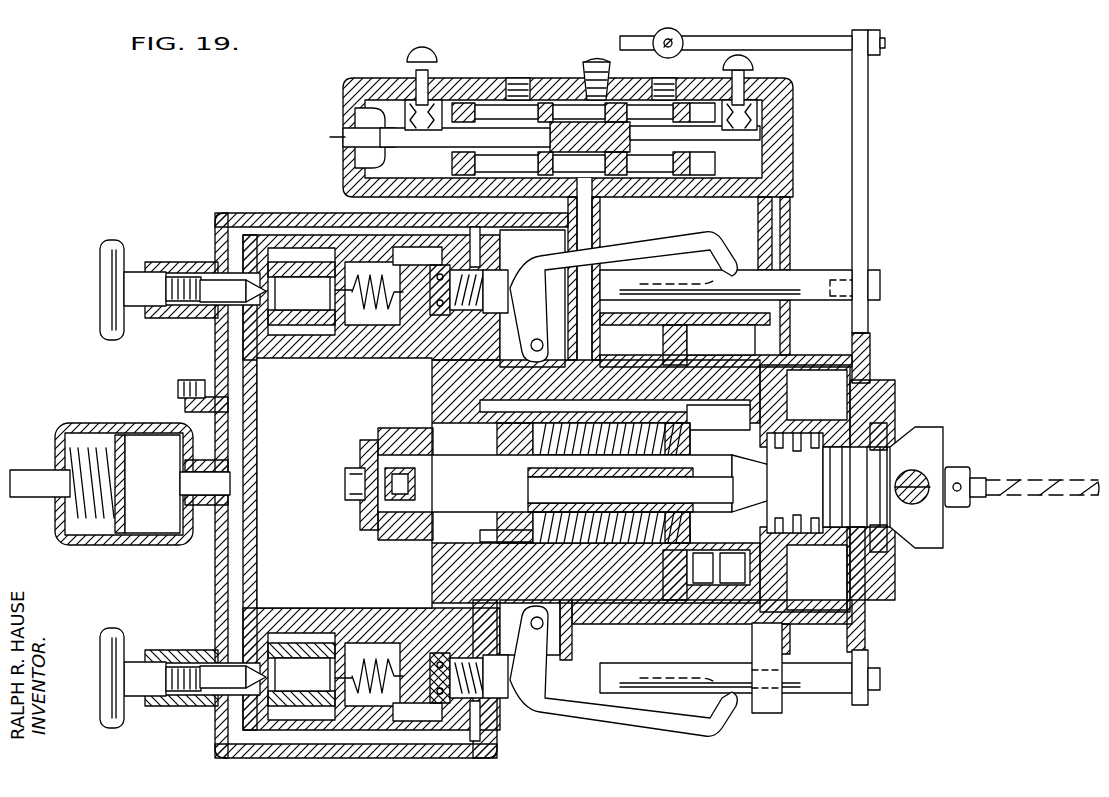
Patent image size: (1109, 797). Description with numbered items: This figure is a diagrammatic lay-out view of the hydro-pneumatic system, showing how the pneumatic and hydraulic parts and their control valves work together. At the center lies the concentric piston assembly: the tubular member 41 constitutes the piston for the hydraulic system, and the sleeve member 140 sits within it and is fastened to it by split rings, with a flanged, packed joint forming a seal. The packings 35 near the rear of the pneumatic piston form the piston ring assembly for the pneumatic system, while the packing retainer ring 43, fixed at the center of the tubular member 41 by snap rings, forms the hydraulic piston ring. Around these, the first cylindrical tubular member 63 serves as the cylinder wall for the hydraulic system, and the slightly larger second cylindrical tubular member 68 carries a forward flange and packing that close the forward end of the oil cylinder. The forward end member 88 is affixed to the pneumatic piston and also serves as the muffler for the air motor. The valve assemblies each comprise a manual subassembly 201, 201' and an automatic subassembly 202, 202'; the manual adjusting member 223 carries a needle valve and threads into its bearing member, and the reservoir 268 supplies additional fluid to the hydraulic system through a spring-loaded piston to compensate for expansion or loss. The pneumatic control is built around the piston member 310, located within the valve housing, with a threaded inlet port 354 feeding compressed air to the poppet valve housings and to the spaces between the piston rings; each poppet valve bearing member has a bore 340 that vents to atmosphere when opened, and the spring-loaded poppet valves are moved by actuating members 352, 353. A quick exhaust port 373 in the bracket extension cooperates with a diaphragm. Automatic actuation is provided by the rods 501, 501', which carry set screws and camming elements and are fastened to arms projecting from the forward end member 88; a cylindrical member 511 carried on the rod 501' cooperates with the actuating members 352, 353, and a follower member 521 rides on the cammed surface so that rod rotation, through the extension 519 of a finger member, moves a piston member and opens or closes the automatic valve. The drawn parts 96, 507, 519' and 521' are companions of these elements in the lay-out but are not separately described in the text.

The packings 35 is at (686, 345).
The tubular member 41 is at (712, 545).
The packing retainer ring 43 is at (688, 418).
The first cylindrical tubular member 63 is at (719, 548).
The second cylindrical tubular member 68 is at (752, 582).
The forward end member 88 is at (862, 318).
The sleeve nut 96 is at (512, 441).
The sleeve member 140 is at (537, 504).
The manual subassembly 201 is at (195, 658).
The manual subassembly 201' is at (183, 282).
The automatic subassembly 202 is at (388, 665).
The automatic subassembly 202' is at (388, 280).
The manual adjusting member 223 is at (112, 632).
The reservoir 268 is at (157, 440).
The piston member 310 is at (540, 96).
The bore 340 is at (410, 100).
The actuating member 352 is at (426, 60).
The actuating member 353 is at (753, 66).
The threaded inlet port 354 is at (596, 70).
The quick exhaust port 373 is at (345, 143).
The rod 501 is at (740, 678).
The rod 501' is at (740, 271).
The rod 507 is at (768, 38).
The cylindrical member 511 is at (664, 42).
The extension 519 is at (623, 671).
The lever 519' is at (623, 297).
The follower member 521 is at (694, 713).
The spring 521' is at (684, 238).